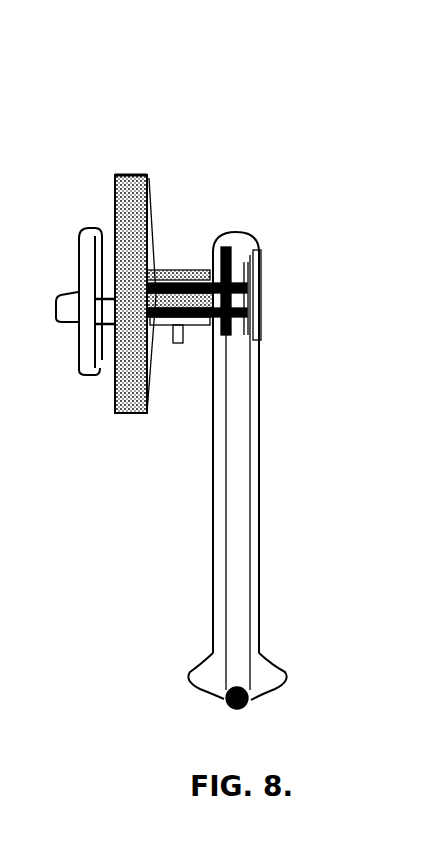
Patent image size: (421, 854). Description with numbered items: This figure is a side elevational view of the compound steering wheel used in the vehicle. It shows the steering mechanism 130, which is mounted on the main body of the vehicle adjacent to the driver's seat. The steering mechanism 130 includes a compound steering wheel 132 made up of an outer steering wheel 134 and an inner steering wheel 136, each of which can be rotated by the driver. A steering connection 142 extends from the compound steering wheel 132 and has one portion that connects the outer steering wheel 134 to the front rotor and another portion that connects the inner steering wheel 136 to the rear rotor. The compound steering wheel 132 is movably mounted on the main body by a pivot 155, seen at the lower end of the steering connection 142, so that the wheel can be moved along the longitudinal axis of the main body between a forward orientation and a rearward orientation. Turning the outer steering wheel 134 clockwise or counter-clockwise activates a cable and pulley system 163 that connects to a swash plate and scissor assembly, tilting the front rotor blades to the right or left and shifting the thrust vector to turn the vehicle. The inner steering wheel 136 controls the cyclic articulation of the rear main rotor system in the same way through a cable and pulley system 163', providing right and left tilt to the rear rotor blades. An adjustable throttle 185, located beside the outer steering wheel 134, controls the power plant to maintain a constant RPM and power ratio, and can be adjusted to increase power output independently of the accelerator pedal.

The steering mechanism 130 is at (323, 163).
The compound steering wheel 132 is at (166, 204).
The outer steering wheel 134 is at (103, 243).
The inner steering wheel 136 is at (134, 174).
The steering connection 142 is at (214, 392).
The pivot 155 is at (247, 712).
The cable and pulley system 163 is at (259, 234).
The cable and pulley system 163' is at (293, 271).
The adjustable throttle 185 is at (57, 322).